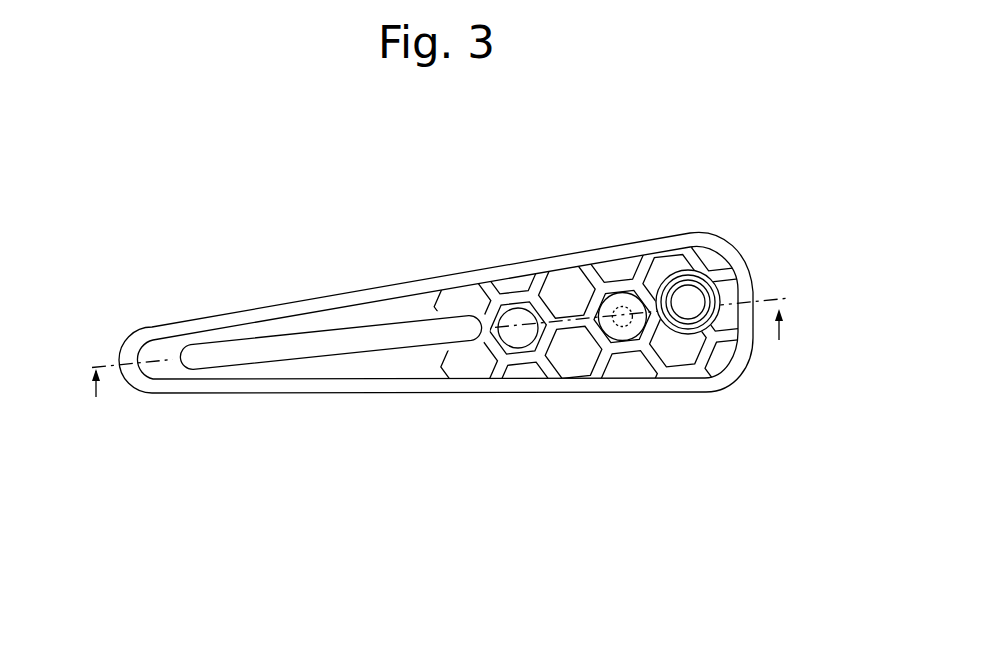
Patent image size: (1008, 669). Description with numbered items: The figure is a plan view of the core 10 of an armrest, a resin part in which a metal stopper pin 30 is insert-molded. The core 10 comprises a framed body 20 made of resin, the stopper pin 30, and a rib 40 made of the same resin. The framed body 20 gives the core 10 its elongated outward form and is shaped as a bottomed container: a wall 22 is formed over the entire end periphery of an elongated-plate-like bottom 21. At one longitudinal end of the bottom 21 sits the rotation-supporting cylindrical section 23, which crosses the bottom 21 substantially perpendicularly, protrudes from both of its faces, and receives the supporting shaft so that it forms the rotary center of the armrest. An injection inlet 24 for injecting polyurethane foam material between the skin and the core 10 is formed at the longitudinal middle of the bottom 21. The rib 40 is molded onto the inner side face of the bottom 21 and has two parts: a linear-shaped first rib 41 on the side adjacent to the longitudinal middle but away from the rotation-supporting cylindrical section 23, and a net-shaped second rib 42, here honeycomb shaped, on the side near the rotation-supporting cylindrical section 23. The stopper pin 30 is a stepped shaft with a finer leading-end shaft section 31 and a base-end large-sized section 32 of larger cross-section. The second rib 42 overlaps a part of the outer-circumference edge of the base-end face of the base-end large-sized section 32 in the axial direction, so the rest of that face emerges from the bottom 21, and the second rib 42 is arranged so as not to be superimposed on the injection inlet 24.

The core 10 is at (737, 240).
The framed body 20 is at (238, 318).
The bottom 21 is at (395, 310).
The wall 22 is at (293, 310).
The rotation-supporting cylindrical section 23 is at (688, 270).
The injection inlet 24 is at (511, 312).
The stopper pin 30 is at (662, 446).
The leading-end shaft section 31 is at (619, 327).
The base-end large-sized section 32 is at (633, 338).
The rib 40 is at (520, 460).
The first rib 41 is at (433, 340).
The second rib 42 is at (520, 360).